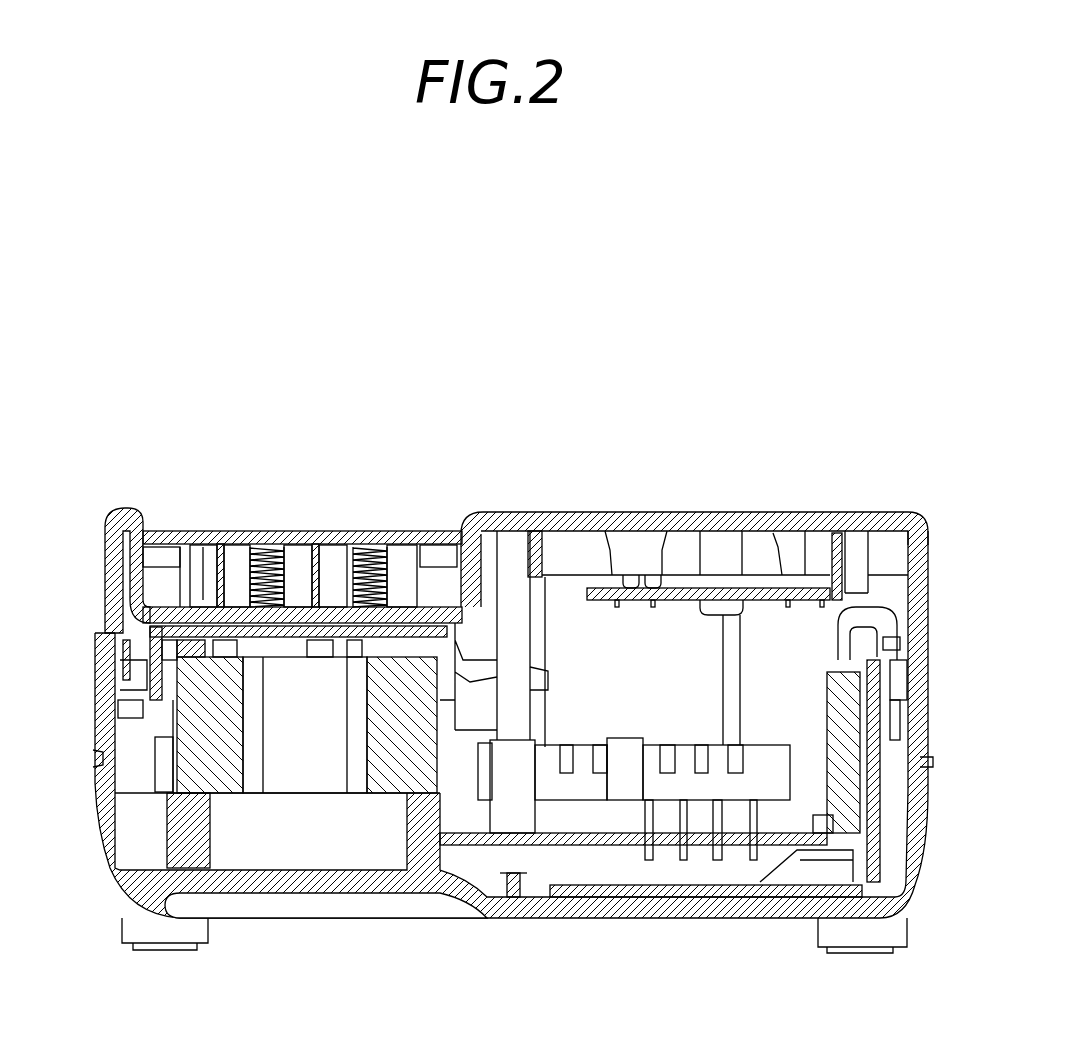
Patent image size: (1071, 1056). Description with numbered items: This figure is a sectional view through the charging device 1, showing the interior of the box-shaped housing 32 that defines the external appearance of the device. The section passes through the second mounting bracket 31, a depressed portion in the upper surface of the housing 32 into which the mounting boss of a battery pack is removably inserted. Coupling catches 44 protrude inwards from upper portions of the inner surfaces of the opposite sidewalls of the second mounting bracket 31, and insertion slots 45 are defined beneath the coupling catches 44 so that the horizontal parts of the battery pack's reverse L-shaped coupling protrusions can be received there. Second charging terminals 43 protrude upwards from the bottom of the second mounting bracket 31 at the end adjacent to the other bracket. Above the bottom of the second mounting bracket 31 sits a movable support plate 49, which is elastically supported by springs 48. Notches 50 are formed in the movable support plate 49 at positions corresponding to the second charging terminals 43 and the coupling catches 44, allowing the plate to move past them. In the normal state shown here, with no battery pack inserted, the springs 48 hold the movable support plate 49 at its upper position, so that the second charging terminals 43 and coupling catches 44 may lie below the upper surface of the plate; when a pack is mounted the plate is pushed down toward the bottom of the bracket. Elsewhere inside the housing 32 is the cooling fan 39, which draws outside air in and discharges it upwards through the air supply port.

The charging device 1 is at (619, 476).
The second mounting bracket 31 is at (330, 520).
The housing 32 is at (735, 517).
The cooling fan 39 is at (393, 757).
The second charging terminals 43 is at (306, 578).
The coupling catches 44 is at (458, 530).
The insertion slots 45 is at (440, 580).
The springs 48 is at (375, 580).
The movable support plate 49 is at (345, 540).
The notches 50 is at (320, 540).